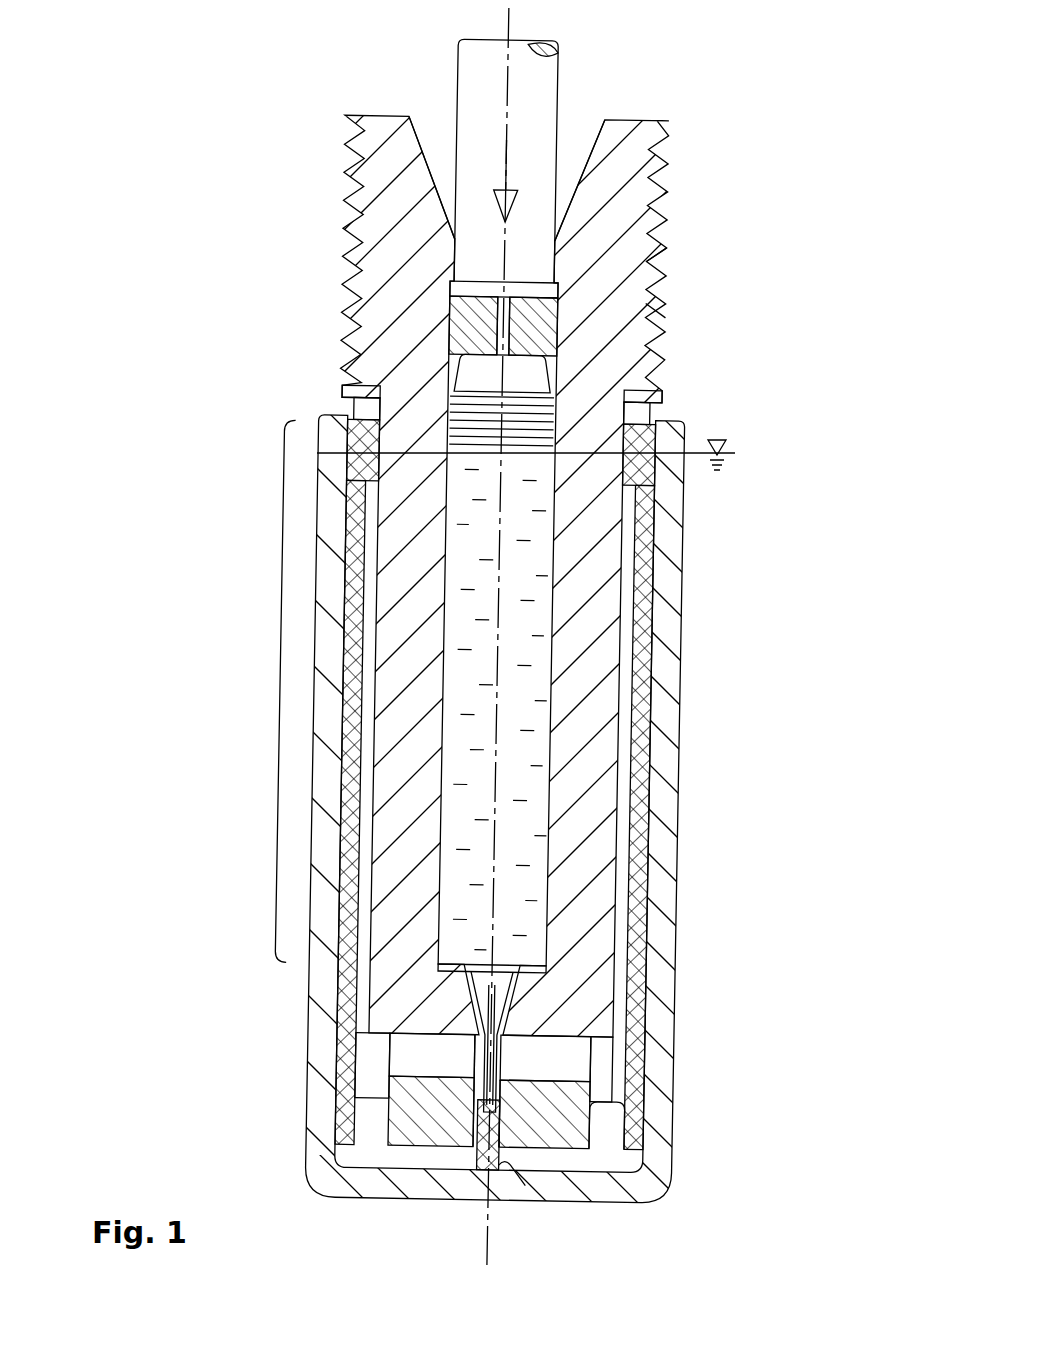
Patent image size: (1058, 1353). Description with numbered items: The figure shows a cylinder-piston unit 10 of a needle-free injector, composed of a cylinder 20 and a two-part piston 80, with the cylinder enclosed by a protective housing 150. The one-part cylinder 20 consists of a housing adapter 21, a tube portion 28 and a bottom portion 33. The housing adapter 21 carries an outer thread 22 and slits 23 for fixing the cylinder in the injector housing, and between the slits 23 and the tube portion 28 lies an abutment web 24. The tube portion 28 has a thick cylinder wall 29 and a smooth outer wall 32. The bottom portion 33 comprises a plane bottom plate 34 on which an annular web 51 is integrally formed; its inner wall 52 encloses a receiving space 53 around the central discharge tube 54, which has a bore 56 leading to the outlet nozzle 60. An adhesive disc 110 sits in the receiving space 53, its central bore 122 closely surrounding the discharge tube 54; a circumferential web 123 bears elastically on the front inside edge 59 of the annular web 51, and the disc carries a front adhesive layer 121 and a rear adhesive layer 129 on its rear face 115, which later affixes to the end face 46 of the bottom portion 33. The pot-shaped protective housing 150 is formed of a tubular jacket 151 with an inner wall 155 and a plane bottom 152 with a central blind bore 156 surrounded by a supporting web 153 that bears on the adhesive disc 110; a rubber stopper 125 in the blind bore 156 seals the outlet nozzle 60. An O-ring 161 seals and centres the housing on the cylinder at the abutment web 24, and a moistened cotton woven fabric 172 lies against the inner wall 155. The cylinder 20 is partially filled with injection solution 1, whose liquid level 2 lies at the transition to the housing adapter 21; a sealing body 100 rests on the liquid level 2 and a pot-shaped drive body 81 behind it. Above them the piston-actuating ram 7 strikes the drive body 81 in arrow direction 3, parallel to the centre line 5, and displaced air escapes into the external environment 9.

The injection solution 1 is at (522, 548).
The liquid level 2 is at (726, 446).
The arrow direction 3 is at (508, 150).
The centre line 5 is at (500, 262).
The piston-actuating ram 7 is at (532, 97).
The external environment 9 is at (581, 108).
The cylinder-piston unit 10 is at (332, 240).
The cylinder 20 is at (382, 712).
The housing adapter 21 is at (657, 309).
The outer thread 22 is at (657, 262).
The slits 23 is at (657, 397).
The abutment web 24 is at (652, 411).
The tube portion 28 is at (283, 540).
The cylinder wall 29 is at (595, 697).
The outer wall 32 is at (617, 733).
The bottom portion 33 is at (530, 1005).
The bottom plate 34 is at (612, 1005).
The end face 46 is at (618, 1052).
The annular web 51 is at (378, 1085).
The inner wall 52 is at (383, 1053).
The receiving space 53 is at (420, 1047).
The discharge tube 54 is at (506, 1068).
The bore 56 is at (600, 1104).
The front inside edge 59 is at (573, 1117).
The outlet nozzle 60 is at (510, 1157).
The piston 80 is at (436, 385).
The drive body 81 is at (468, 325).
The sealing body 100 is at (466, 425).
The adhesive disc 110 is at (418, 1122).
The rear face 115 is at (390, 1080).
The adhesive layer 121 is at (395, 1188).
The central bore 122 is at (585, 1178).
The circumferential web 123 is at (367, 1105).
The rubber stopper 125 is at (470, 1170).
The adhesive layer 129 is at (483, 1073).
The protective housing 150 is at (308, 822).
The sleeve wall 151 is at (665, 805).
The bottom 152 is at (432, 1183).
The supporting web 153 is at (525, 1165).
The inner wall 155 is at (660, 852).
The blind bore 156 is at (510, 1165).
The O-ring 161 is at (372, 456).
The cotton woven fabric 172 is at (640, 622).